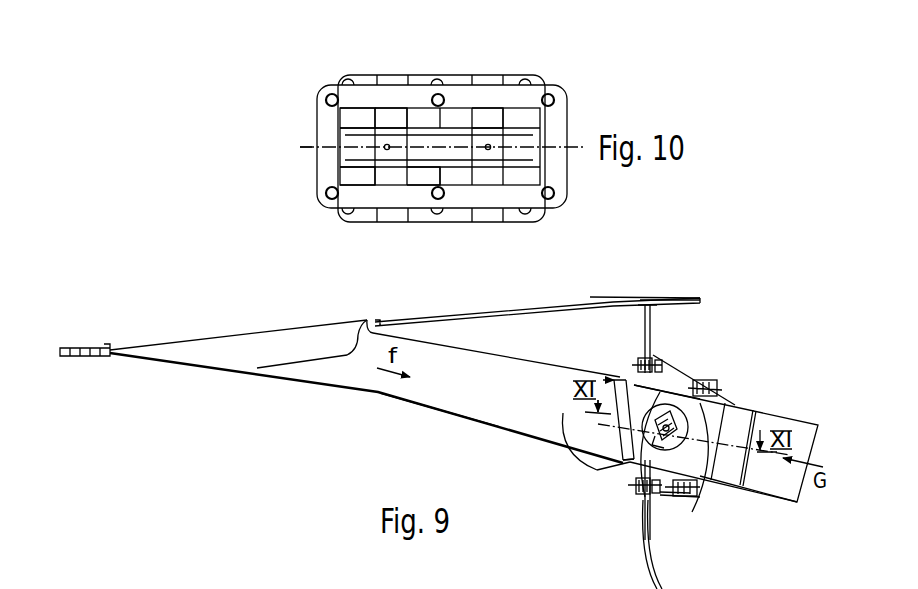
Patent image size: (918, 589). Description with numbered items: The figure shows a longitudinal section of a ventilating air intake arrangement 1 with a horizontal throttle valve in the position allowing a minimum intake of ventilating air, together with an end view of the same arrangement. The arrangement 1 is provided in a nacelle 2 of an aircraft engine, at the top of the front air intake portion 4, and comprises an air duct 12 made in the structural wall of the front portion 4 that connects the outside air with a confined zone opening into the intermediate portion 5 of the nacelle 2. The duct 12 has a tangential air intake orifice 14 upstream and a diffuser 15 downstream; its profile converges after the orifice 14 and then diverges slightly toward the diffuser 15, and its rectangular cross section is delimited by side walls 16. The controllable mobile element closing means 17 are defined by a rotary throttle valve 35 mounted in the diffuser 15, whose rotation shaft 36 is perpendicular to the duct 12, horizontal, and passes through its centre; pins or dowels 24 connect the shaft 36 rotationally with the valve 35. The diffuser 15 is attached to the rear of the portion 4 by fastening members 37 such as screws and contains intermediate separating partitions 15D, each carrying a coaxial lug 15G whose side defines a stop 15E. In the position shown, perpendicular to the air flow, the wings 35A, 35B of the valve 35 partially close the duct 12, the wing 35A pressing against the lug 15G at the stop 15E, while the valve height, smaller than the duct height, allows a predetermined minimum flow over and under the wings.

In FIG. 9, the ventilating air intake arrangement 1 is at (300, 325).
In FIG. 9, the nacelle 2 is at (672, 290).
In FIG. 9, the front air intake portion 4 is at (485, 312).
In FIG. 9, the intermediate portion 5 is at (700, 303).
In FIG. 10, the air duct 12 is at (390, 118).
In FIG. 9, the air duct 12 is at (496, 397).
In FIG. 9, the air intake orifice 14 is at (225, 343).
In FIG. 10, the diffuser 15 is at (313, 166).
In FIG. 9, the diffuser 15 is at (785, 405).
In FIG. 10, the intermediate separating partitions 15D is at (498, 117).
In FIG. 9, the intermediate separating partitions 15D is at (682, 397).
In FIG. 9, the stop 15E is at (623, 462).
In FIG. 9, the lug 15G is at (622, 463).
In FIG. 9, the side walls 16 is at (406, 403).
In FIG. 9, the controllable mobile element closing means 17 is at (700, 386).
In FIG. 10, the pins or dowels 24 is at (388, 151).
In FIG. 10, the rotary throttle valve 35 is at (523, 116).
In FIG. 9, the rotary throttle valve 35 is at (713, 480).
In FIG. 10, the wing of the throttle valve 35A is at (425, 163).
In FIG. 9, the wing of the throttle valve 35A is at (684, 497).
In FIG. 10, the wing of the throttle valve 35B is at (420, 133).
In FIG. 9, the wing of the throttle valve 35B is at (630, 378).
In FIG. 10, the rotation shaft 36 is at (350, 143).
In FIG. 9, the rotation shaft 36 is at (688, 428).
In FIG. 9, the fastening members 37 is at (636, 358).